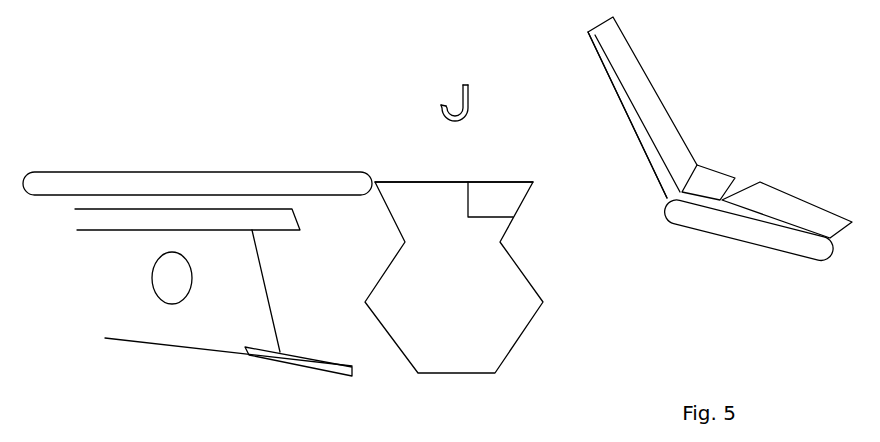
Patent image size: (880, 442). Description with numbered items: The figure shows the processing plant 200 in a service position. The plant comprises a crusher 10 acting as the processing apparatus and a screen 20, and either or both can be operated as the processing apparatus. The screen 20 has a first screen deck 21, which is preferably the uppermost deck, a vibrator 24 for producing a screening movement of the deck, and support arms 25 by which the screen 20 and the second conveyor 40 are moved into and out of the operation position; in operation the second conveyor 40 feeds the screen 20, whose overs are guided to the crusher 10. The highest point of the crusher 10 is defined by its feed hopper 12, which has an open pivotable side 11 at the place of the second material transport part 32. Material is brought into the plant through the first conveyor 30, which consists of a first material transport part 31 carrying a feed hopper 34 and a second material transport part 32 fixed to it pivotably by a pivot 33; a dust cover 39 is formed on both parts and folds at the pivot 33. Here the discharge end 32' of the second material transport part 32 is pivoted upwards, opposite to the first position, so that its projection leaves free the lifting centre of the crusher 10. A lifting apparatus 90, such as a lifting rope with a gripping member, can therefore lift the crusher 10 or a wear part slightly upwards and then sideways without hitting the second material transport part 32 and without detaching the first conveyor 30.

The processing plant 200 is at (270, 84).
The second conveyor 40 is at (197, 163).
The first screen deck 21 is at (183, 168).
The vibrator 24 is at (127, 278).
The screen 20 is at (219, 326).
The support arms 25 is at (290, 384).
The crusher 10 is at (490, 277).
The feed hopper 12 is at (454, 159).
The open pivotable side 11 is at (528, 203).
The dust cover 39 is at (633, 67).
The second material transport part 32 is at (646, 113).
The discharge end 32' is at (580, 115).
The pivot 33 is at (686, 226).
The first material transport part 31 is at (749, 249).
The feed hopper 34 is at (787, 182).
The first conveyor 30 is at (735, 119).
The lifting apparatus 90 is at (500, 103).